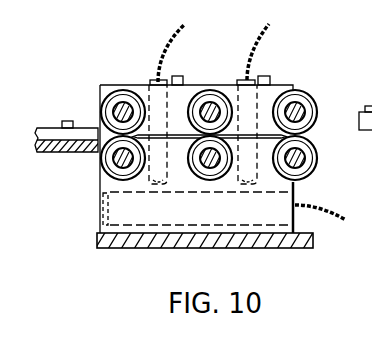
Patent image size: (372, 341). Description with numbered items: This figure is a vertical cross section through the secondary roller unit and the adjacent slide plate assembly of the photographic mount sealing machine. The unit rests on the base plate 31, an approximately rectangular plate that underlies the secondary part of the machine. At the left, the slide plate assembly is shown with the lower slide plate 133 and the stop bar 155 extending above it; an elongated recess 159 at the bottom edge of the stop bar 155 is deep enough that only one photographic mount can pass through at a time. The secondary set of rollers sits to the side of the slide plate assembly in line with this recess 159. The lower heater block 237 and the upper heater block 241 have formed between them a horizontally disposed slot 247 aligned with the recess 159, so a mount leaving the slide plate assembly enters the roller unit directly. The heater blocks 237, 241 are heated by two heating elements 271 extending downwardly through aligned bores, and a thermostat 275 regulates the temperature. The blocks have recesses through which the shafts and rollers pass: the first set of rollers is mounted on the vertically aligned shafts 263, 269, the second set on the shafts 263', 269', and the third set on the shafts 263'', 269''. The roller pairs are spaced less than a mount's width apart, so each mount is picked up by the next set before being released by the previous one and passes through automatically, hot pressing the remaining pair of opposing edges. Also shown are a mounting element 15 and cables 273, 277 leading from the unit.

The mounting block 15 is at (365, 111).
The base plate 31 is at (247, 249).
The lower slide plate 133 is at (49, 152).
The stop bar 155 is at (98, 126).
The recess 159 is at (97, 133).
The lower heater block 237 is at (106, 184).
The upper heater block 241 is at (104, 85).
The slot 247 is at (167, 139).
The shaft 263 is at (124, 97).
The shaft 263' is at (228, 114).
The shaft 263'' is at (314, 114).
The shaft 269 is at (104, 160).
The shaft 269' is at (232, 160).
The shaft 269'' is at (317, 160).
The heating element 271 is at (167, 108).
The cable 273 is at (177, 37).
The thermostat 275 is at (201, 208).
The cable 277 is at (328, 208).